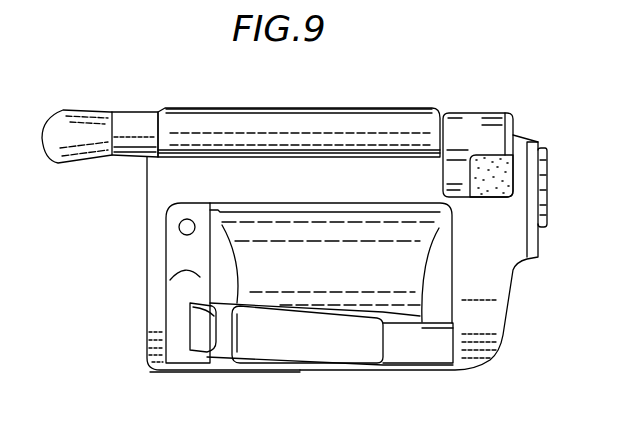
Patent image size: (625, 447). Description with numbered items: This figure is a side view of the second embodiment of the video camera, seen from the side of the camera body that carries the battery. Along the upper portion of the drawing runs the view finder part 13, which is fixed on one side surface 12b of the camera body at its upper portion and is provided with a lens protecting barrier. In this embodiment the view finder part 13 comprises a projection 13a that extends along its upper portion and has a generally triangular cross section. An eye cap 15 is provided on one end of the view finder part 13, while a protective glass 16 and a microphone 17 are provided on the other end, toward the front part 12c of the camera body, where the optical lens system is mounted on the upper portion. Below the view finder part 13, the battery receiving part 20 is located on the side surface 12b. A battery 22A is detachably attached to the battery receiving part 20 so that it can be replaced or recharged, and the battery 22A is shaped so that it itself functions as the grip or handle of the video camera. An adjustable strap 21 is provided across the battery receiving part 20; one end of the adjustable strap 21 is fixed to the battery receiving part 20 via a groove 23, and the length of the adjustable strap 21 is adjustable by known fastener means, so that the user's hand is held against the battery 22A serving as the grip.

The side surface 12b is at (150, 197).
The front part 12c is at (508, 313).
The view finder part 13 is at (188, 117).
The projection 13a is at (300, 107).
The eye cap 15 is at (65, 118).
The protective glass 16 is at (515, 133).
The microphone 17 is at (485, 185).
The battery receiving part 20 is at (172, 310).
The adjustable strap 21 is at (333, 352).
The battery 22A is at (258, 225).
The groove 23 is at (198, 338).